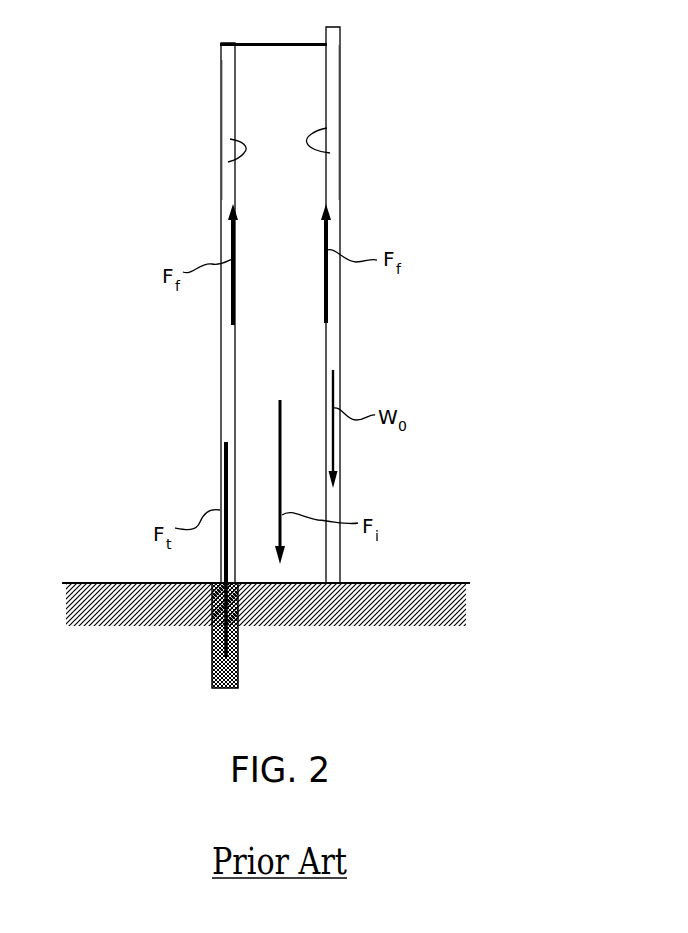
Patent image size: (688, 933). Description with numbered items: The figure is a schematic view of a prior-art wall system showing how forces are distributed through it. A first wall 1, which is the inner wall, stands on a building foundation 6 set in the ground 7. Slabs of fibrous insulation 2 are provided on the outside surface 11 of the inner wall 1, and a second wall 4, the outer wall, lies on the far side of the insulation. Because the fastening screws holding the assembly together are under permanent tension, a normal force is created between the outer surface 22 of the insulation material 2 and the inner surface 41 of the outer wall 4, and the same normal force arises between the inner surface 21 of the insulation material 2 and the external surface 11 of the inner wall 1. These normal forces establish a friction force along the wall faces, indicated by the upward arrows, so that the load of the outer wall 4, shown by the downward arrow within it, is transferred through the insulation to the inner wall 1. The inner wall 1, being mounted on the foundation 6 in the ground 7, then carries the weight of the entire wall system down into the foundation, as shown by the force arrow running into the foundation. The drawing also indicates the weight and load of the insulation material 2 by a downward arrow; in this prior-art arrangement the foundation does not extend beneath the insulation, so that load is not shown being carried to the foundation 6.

The first wall 1 is at (232, 90).
The fibrous insulation 2 is at (280, 58).
The second wall 4 is at (333, 70).
The inner surface of the insulation material 21 is at (243, 117).
The outer surface of the insulation material 22 is at (320, 88).
The outside surface of the inner wall 11 is at (244, 153).
The inner surface of the outer wall structure 41 is at (307, 143).
The ground 7 is at (422, 583).
The building foundation 6 is at (238, 657).